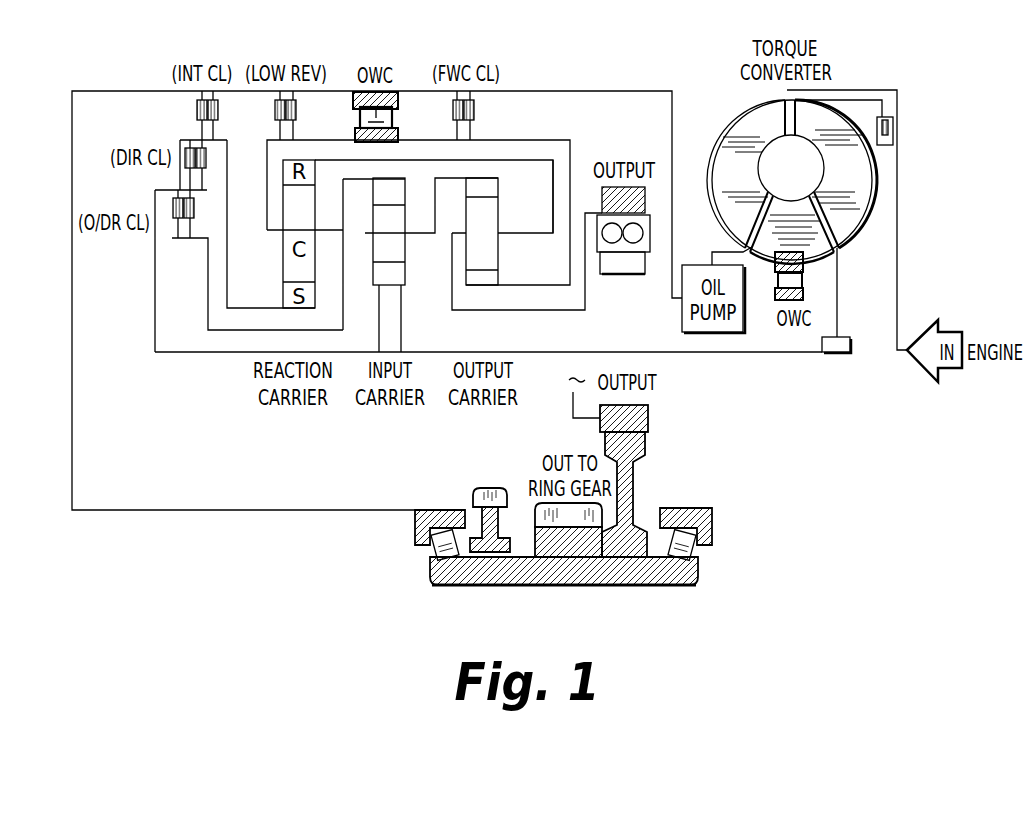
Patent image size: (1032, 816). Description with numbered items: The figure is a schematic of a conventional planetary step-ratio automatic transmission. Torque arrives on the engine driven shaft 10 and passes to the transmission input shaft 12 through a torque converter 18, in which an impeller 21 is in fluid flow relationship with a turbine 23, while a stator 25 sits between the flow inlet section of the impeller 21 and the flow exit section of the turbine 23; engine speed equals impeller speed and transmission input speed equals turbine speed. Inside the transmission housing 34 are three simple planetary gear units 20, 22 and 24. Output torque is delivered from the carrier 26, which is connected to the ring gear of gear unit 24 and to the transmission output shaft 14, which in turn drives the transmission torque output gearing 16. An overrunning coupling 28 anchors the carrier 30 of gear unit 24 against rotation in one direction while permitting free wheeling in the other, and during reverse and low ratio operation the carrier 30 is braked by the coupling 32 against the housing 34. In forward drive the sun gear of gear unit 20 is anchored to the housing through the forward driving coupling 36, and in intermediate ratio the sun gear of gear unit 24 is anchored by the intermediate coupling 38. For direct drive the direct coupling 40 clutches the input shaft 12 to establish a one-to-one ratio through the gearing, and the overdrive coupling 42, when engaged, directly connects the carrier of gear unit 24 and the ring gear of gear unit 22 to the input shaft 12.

The engine driven shaft 10 is at (902, 347).
The transmission input shaft 12 is at (713, 352).
The transmission output shaft 14 is at (508, 310).
The transmission torque output gearing 16 is at (528, 513).
The torque converter 18 is at (777, 166).
The planetary gear unit 20 is at (483, 176).
The torque converter impeller 21 is at (722, 184).
The planetary gear unit 22 is at (391, 176).
The turbine 23 is at (836, 184).
The planetary gear unit 24 is at (298, 156).
The stator 25 is at (785, 232).
The carrier 26 is at (513, 230).
The overrunning coupling 28 is at (372, 110).
The carrier 30 is at (266, 185).
The coupling 32 is at (275, 110).
The transmission housing 34 is at (565, 91).
The forward driving coupling 36 is at (475, 110).
The intermediate coupling 38 is at (197, 110).
The direct coupling 40 is at (185, 158).
The overdrive coupling 42 is at (173, 208).